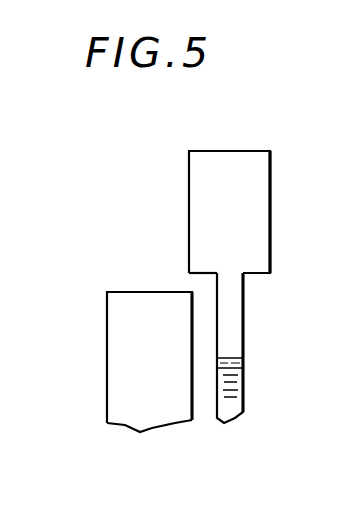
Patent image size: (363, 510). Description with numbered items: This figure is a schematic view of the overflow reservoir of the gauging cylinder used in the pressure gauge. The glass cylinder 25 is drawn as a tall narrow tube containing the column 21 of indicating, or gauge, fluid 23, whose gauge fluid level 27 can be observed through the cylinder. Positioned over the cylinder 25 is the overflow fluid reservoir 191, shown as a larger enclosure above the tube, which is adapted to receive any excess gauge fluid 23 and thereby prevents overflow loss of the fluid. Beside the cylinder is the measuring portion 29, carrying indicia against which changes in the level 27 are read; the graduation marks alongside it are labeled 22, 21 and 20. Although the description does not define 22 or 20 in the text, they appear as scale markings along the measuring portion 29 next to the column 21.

The overflow fluid reservoir 191 is at (262, 224).
The glass cylinder 25 is at (246, 323).
The gauge fluid level 27 is at (244, 358).
The gauge fluid 23 is at (228, 374).
The column 21 is at (240, 397).
The measuring portion 29 is at (113, 313).
The scale level 22 is at (190, 357).
The scale level 20 is at (190, 410).